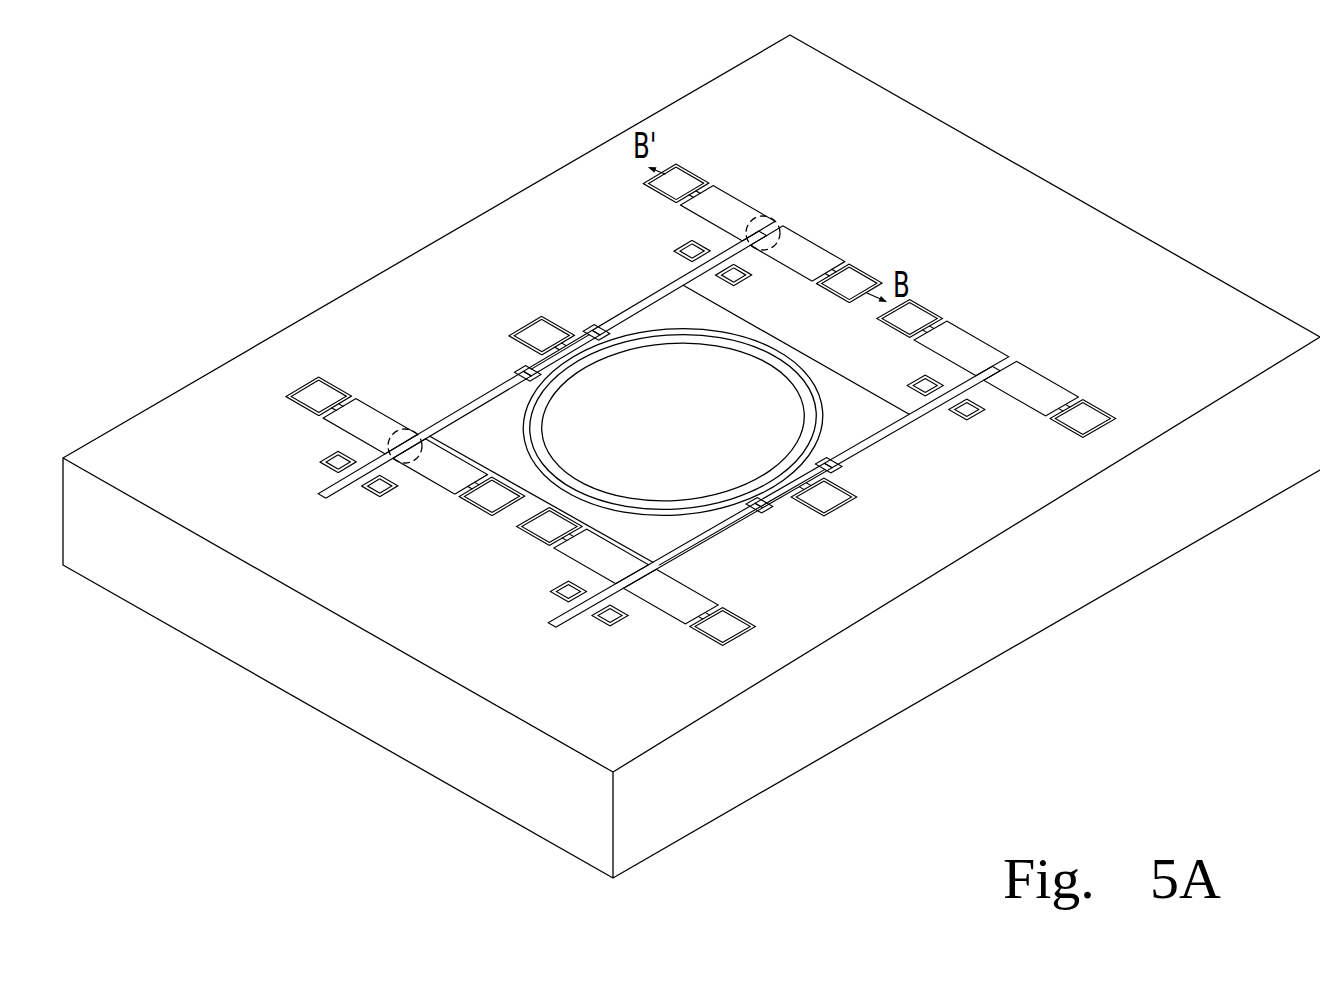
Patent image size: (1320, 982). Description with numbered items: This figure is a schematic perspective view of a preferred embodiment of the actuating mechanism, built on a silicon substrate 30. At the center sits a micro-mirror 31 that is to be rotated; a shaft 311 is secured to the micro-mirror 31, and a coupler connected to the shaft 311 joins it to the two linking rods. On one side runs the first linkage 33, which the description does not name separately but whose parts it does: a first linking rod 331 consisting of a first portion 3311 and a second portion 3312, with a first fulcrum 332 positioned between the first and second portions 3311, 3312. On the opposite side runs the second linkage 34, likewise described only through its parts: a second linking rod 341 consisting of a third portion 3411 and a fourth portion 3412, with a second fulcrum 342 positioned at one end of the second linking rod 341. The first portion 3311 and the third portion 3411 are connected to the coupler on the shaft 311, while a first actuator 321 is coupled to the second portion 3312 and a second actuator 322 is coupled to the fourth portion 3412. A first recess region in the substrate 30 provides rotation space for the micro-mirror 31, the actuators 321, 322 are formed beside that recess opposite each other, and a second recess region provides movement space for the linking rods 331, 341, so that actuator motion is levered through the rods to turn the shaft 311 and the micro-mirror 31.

The silicon substrate 30 is at (912, 563).
The micro-mirror 31 is at (743, 425).
The shaft 311 is at (515, 333).
The first actuator 321 is at (714, 206).
The second actuator 322 is at (459, 470).
The first electrode strip 33 is at (753, 320).
The first linking rod 331 is at (693, 278).
The first fulcrum 332 is at (687, 249).
The first portion 3311 is at (585, 325).
The second portion 3312 is at (780, 245).
The second electrode strip 34 is at (510, 450).
The second linking rod 341 is at (470, 398).
The second fulcrum 342 is at (325, 472).
The third portion 3411 is at (525, 375).
The fourth portion 3412 is at (410, 458).